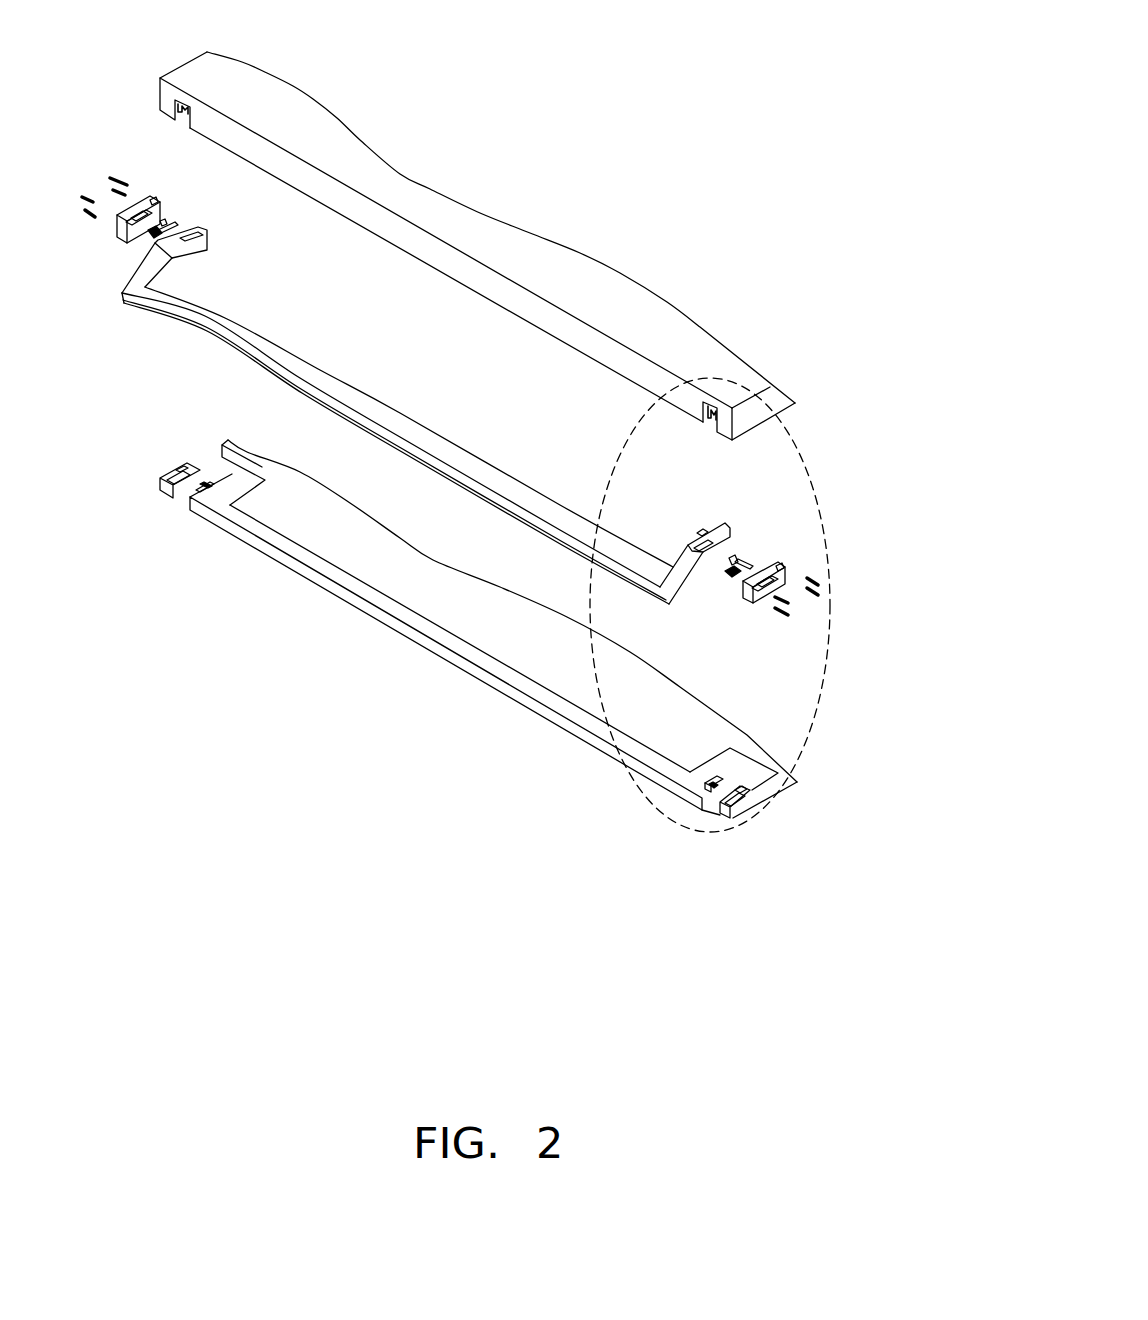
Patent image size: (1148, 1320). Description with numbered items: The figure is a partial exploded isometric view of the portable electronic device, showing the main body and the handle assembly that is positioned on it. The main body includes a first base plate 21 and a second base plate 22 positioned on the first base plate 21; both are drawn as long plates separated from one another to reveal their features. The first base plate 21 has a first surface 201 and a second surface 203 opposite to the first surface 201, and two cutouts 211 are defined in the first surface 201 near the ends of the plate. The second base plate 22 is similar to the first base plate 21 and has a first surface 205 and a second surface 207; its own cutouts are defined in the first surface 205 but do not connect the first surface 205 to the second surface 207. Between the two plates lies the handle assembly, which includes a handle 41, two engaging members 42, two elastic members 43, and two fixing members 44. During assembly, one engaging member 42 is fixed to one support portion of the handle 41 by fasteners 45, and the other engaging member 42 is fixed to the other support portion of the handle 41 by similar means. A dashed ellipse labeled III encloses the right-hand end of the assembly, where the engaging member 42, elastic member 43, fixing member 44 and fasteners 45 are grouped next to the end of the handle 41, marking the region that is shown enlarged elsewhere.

The first base plate 21 is at (351, 639).
The second base plate 22 is at (547, 262).
The first surface 201 is at (215, 461).
The second surface 203 is at (263, 555).
The first surface 205 is at (336, 219).
The second surface 207 is at (201, 72).
The cutouts 211 is at (709, 801).
The handle 41 is at (172, 312).
The engaging members 42 is at (782, 561).
The elastic members 43 is at (727, 576).
The fixing members 44 is at (741, 563).
The fasteners 45 is at (819, 578).
The detail region III is at (810, 460).